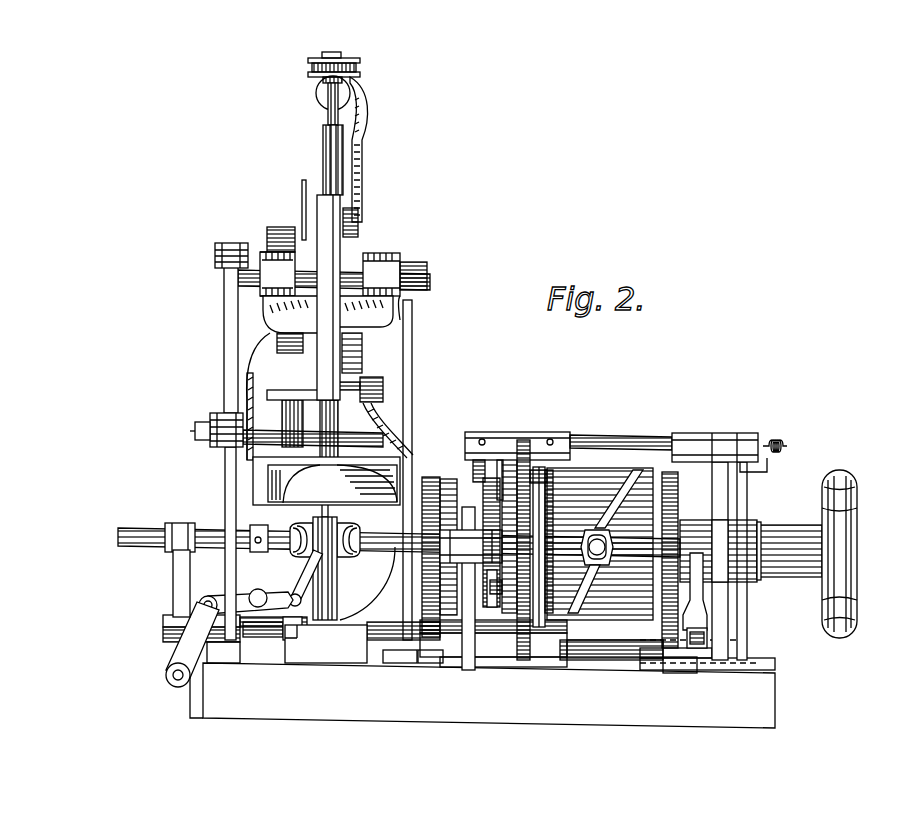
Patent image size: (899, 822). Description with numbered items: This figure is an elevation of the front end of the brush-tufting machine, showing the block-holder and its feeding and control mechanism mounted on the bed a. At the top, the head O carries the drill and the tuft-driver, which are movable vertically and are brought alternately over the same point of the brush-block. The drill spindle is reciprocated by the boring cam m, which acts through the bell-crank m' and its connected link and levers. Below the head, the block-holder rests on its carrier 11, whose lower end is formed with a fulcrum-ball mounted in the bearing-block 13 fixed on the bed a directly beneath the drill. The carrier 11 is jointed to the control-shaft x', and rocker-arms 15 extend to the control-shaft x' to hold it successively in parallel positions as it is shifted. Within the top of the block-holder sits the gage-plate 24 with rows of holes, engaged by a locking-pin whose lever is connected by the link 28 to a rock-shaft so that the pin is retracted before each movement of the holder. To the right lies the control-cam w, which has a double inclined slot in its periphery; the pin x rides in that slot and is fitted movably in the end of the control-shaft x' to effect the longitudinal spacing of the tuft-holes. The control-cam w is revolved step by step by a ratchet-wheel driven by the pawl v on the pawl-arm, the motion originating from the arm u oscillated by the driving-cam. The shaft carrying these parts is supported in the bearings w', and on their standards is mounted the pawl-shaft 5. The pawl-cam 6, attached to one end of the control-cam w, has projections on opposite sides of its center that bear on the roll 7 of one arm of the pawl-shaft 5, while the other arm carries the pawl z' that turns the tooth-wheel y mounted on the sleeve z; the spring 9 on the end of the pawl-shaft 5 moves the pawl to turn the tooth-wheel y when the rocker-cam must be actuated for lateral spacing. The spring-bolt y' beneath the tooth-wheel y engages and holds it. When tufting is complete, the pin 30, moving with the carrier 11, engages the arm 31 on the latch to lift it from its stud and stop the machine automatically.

The head O is at (327, 225).
The bell-crank m' is at (207, 409).
The gage-plate 24 is at (248, 465).
The pin 30 is at (253, 530).
The control-shaft x' is at (379, 539).
The rocker-arms 15 is at (177, 577).
The arm 31 is at (227, 573).
The bearing-block 13 is at (326, 644).
The cam m is at (338, 533).
The carrier 11 is at (328, 585).
The link 28 is at (302, 590).
The sleeve z is at (438, 544).
The pawl z' is at (463, 512).
The bearings w' is at (624, 526).
The pawl-shaft 5 is at (591, 433).
The spring 9 is at (773, 438).
The control-cam w is at (600, 515).
The roll 7 is at (548, 483).
The pin x is at (605, 541).
The pawl v is at (668, 630).
The arm u is at (607, 653).
The pawl-cam 6 is at (540, 598).
The spring-bolt y' is at (494, 636).
The rocker tooth-wheel y is at (512, 641).
The bed a is at (770, 705).